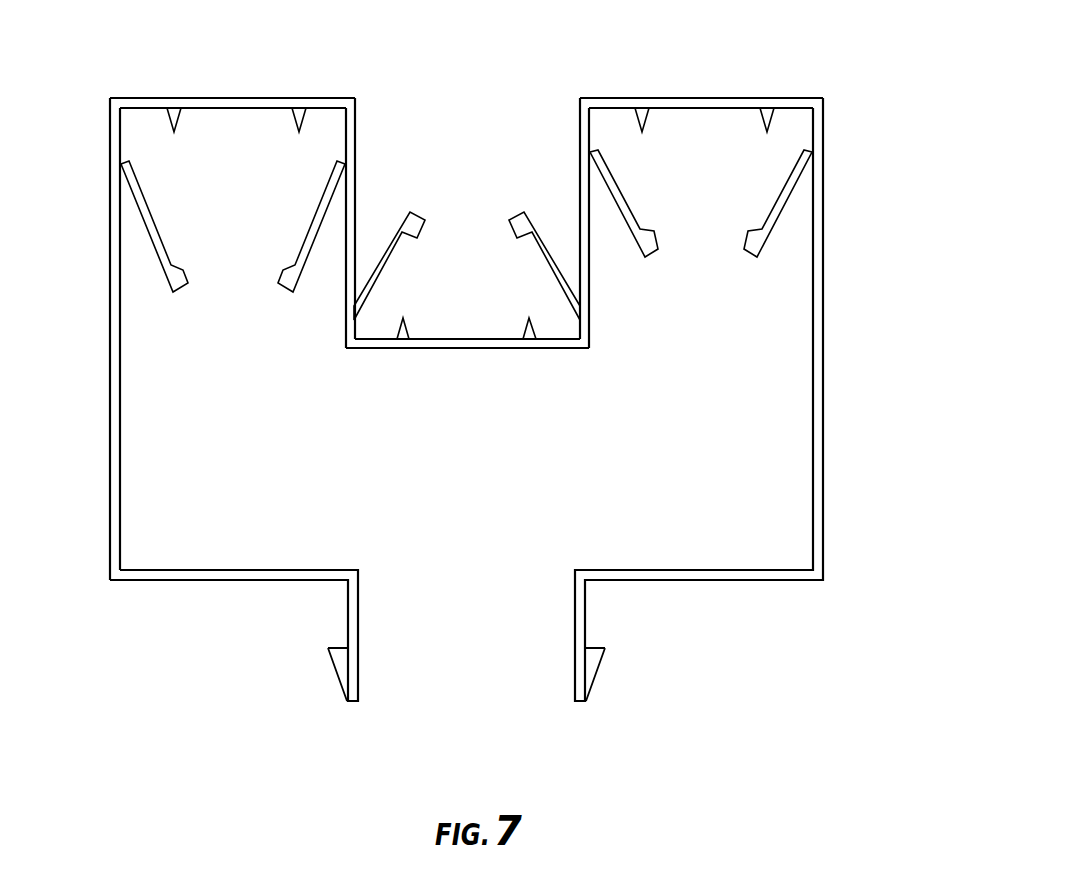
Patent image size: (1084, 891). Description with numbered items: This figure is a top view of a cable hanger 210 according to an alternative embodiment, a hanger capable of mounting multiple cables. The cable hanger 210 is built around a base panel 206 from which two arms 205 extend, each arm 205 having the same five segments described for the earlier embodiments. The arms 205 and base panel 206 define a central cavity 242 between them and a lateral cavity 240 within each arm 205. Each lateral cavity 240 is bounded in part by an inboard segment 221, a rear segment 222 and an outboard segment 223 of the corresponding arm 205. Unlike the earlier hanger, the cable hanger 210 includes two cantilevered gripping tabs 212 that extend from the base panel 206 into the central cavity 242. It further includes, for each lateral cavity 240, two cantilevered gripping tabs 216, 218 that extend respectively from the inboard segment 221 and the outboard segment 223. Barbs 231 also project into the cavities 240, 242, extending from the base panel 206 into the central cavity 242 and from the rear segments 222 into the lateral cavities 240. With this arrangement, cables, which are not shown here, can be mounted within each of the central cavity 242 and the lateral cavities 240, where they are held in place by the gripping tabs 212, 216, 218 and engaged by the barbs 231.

The arm 205 is at (98, 375).
The base panel 206 is at (468, 350).
The cable hanger 210 is at (503, 363).
The cantilevered gripping tab 212 is at (389, 257).
The cantilevered gripping tab 216 is at (316, 229).
The cantilevered gripping tab 218 is at (153, 219).
The inboard segment 221 is at (357, 178).
The rear segment 222 is at (237, 98).
The outboard segment 223 is at (110, 250).
The barb 231 is at (297, 107).
The lateral cavity 240 is at (790, 325).
The central cavity 242 is at (475, 104).